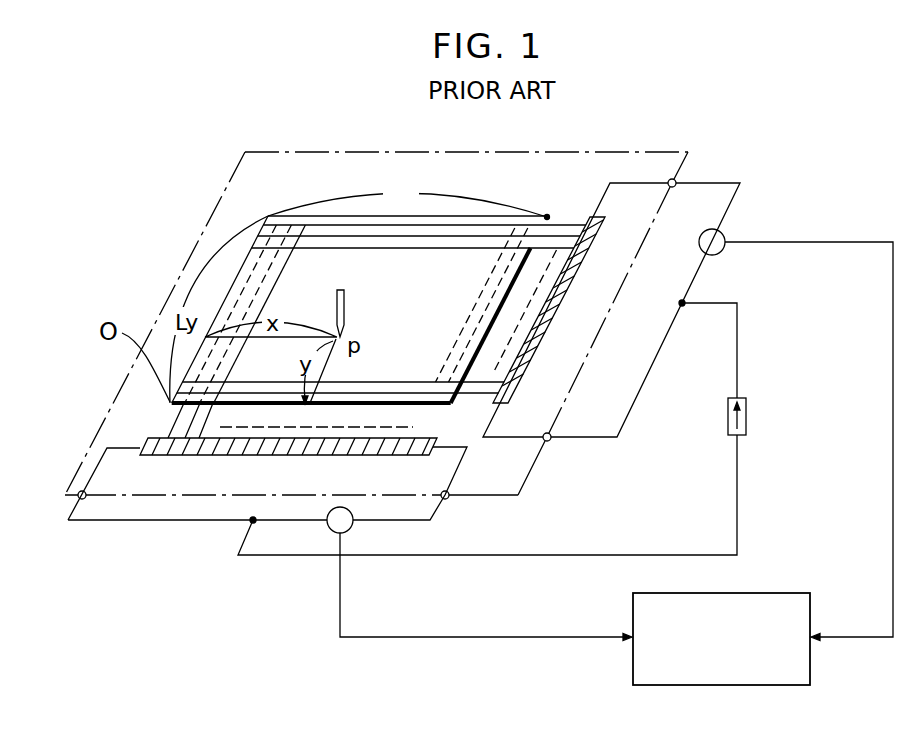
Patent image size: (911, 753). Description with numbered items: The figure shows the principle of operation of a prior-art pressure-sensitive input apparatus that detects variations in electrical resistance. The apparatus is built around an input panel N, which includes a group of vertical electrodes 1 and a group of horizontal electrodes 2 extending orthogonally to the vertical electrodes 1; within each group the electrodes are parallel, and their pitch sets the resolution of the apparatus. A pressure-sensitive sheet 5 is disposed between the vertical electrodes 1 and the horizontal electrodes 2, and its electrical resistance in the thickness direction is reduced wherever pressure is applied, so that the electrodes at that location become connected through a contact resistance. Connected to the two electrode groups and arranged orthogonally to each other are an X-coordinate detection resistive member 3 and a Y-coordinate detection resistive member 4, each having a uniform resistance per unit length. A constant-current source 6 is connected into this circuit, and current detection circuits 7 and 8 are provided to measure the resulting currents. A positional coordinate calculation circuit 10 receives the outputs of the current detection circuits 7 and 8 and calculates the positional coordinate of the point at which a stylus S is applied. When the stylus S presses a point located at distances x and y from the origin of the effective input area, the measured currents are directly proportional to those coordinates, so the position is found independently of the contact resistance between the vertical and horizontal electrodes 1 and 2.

The vertical electrodes 1 is at (170, 432).
The horizontal electrodes 2 is at (564, 222).
The X-coordinate detection resistive member 3 is at (268, 456).
The Y-coordinate detection resistive member 4 is at (577, 272).
The pressure-sensitive sheet 5 is at (456, 258).
The constant-current source 6 is at (747, 397).
The current detection circuit 7 is at (352, 528).
The current detection circuit 8 is at (723, 233).
The positional coordinate calculation circuit 10 is at (717, 592).
The input panel N is at (344, 154).
The stylus S is at (345, 295).